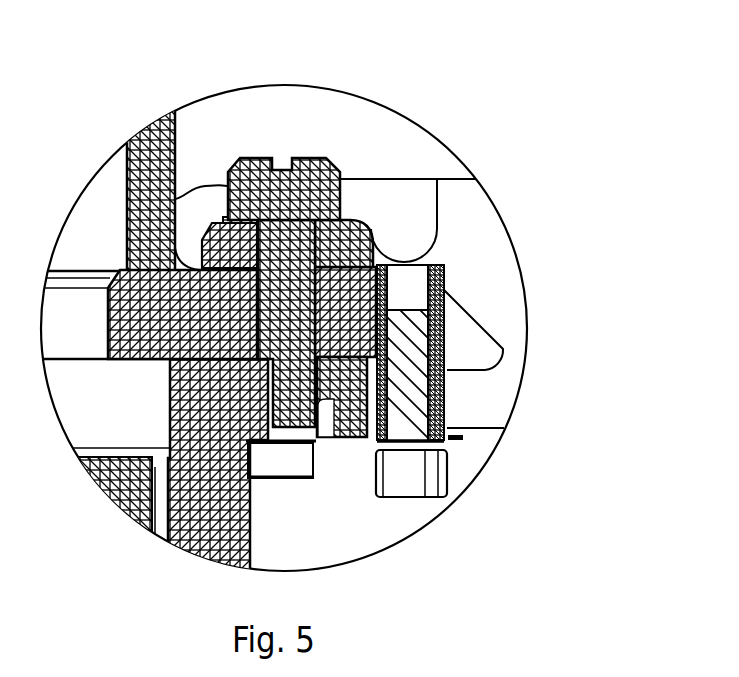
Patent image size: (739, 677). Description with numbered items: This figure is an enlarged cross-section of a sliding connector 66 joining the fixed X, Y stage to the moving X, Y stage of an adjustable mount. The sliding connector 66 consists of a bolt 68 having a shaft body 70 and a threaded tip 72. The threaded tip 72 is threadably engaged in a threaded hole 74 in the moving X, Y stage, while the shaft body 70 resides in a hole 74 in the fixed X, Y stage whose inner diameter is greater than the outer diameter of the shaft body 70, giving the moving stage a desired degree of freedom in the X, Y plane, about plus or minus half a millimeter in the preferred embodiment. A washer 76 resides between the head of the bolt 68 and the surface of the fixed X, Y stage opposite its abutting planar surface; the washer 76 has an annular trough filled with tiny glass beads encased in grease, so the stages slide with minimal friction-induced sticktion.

The sliding connector 66 is at (398, 213).
The bolt 68 is at (322, 160).
The shaft body 70 is at (373, 234).
The threaded tip 72 is at (332, 395).
The hole 74 is at (443, 287).
The washer 76 is at (317, 218).